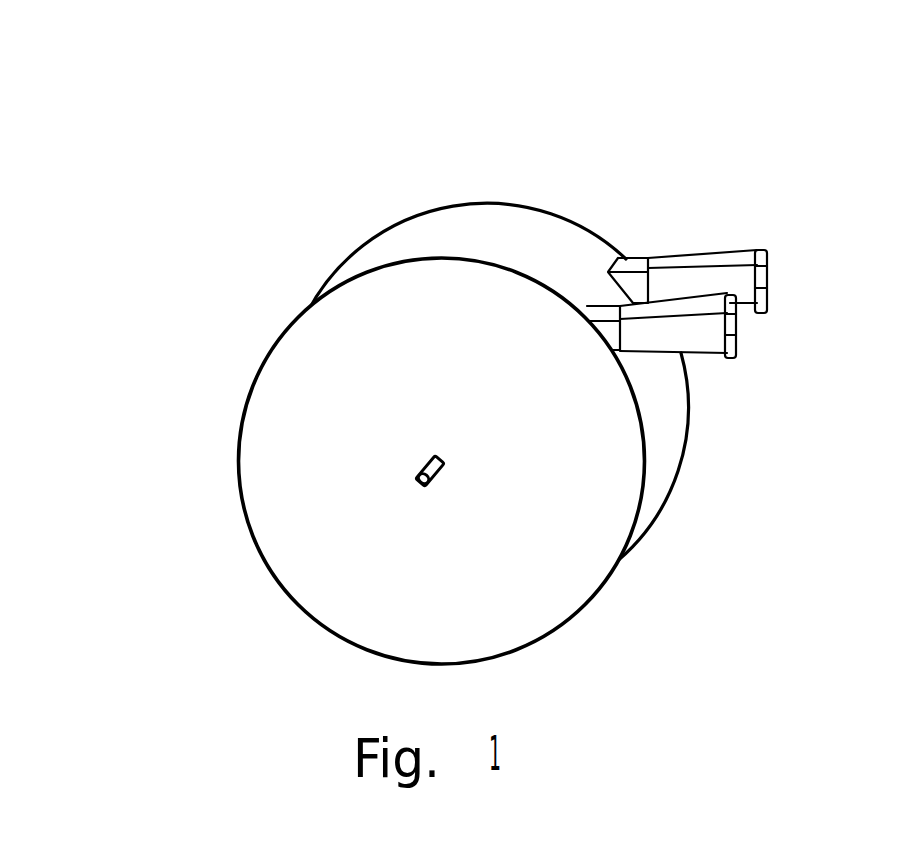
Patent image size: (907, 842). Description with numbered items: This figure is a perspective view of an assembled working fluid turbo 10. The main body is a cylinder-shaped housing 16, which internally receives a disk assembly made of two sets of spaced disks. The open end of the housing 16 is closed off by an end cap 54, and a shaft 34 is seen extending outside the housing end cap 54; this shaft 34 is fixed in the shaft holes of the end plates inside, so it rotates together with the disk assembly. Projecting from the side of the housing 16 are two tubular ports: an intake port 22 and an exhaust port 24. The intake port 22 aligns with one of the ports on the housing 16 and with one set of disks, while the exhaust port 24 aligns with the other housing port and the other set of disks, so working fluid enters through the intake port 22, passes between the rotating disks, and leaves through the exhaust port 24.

The working fluid turbo 10 is at (468, 349).
The housing 16 is at (470, 227).
The intake port 22 is at (735, 352).
The exhaust port 24 is at (766, 300).
The shaft 34 is at (423, 462).
The end cap 54 is at (572, 583).